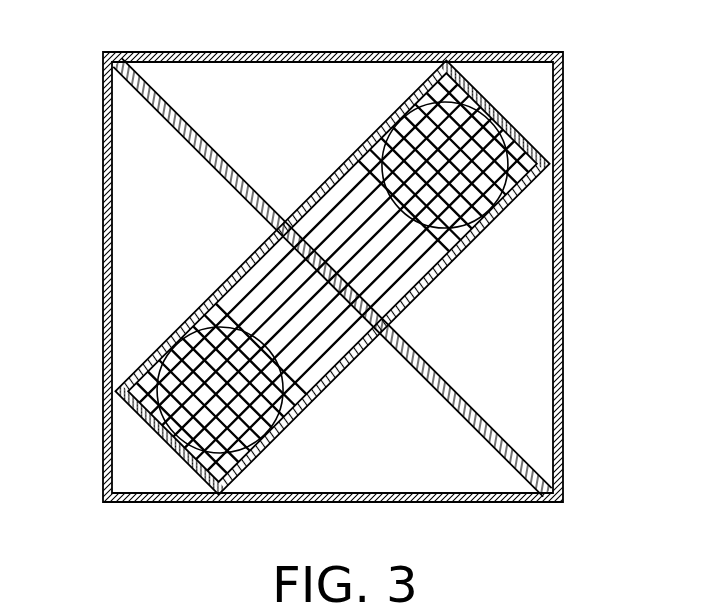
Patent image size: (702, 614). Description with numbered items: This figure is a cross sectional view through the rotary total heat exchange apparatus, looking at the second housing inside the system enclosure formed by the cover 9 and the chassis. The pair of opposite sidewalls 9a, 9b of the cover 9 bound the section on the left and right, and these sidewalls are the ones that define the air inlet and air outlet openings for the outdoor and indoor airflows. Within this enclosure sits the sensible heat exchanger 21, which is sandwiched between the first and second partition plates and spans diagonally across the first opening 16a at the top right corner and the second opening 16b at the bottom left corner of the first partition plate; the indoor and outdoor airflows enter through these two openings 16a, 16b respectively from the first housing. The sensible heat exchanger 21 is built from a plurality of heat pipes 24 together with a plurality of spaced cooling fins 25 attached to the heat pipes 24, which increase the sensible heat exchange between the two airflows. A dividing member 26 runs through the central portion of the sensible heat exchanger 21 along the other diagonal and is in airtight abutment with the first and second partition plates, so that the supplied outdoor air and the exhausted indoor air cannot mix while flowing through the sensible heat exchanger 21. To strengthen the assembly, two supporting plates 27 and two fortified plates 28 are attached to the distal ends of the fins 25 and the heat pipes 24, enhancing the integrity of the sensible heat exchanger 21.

The cover 9 is at (471, 52).
The sidewall of the cover 9a is at (561, 228).
The sidewall of the cover 9b is at (105, 223).
The first opening 16a is at (483, 128).
The second opening 16b is at (265, 415).
The sensible heat exchanger 21 is at (460, 375).
The heat pipes 24 is at (410, 263).
The cooling fins 25 is at (370, 133).
The dividing member 26 is at (202, 140).
The supporting plates 27 is at (246, 252).
The fortified plates 28 is at (153, 430).